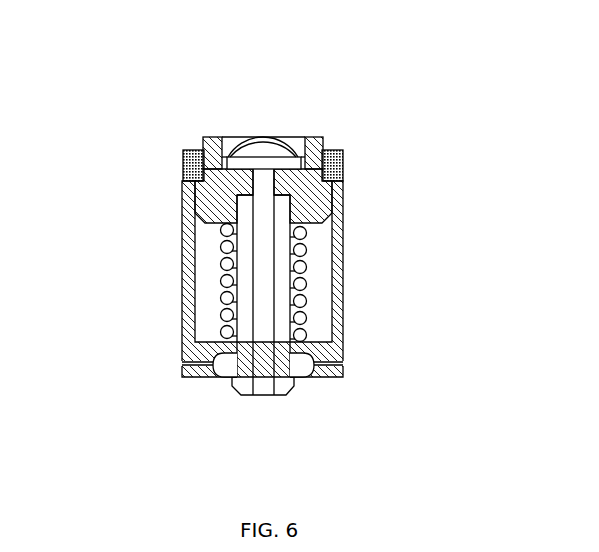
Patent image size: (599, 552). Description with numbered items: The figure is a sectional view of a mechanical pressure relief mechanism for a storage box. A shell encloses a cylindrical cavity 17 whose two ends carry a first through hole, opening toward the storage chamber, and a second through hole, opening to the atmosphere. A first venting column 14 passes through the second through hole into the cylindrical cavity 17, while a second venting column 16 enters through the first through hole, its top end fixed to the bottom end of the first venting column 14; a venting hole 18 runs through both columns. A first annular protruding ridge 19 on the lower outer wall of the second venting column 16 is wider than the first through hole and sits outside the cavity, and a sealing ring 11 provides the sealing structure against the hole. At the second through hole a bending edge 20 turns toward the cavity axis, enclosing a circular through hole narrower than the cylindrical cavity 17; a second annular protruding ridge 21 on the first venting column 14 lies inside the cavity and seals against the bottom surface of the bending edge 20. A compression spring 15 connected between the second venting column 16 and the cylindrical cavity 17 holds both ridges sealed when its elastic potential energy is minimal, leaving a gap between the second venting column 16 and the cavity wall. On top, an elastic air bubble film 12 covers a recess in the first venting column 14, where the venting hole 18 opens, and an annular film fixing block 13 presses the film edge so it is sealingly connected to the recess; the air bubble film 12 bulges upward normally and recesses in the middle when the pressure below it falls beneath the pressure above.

The sealing ring 11 is at (218, 367).
The air bubble film 12 is at (263, 137).
The film fixing block 13 is at (317, 138).
The first venting column 14 is at (200, 163).
The compression spring 15 is at (223, 262).
The second venting column 16 is at (288, 316).
The cylindrical cavity 17 is at (322, 258).
The venting hole 18 is at (262, 387).
The first annular protruding ridge 19 is at (295, 377).
The bending edge 20 is at (342, 167).
The second annular protruding ridge 21 is at (222, 202).